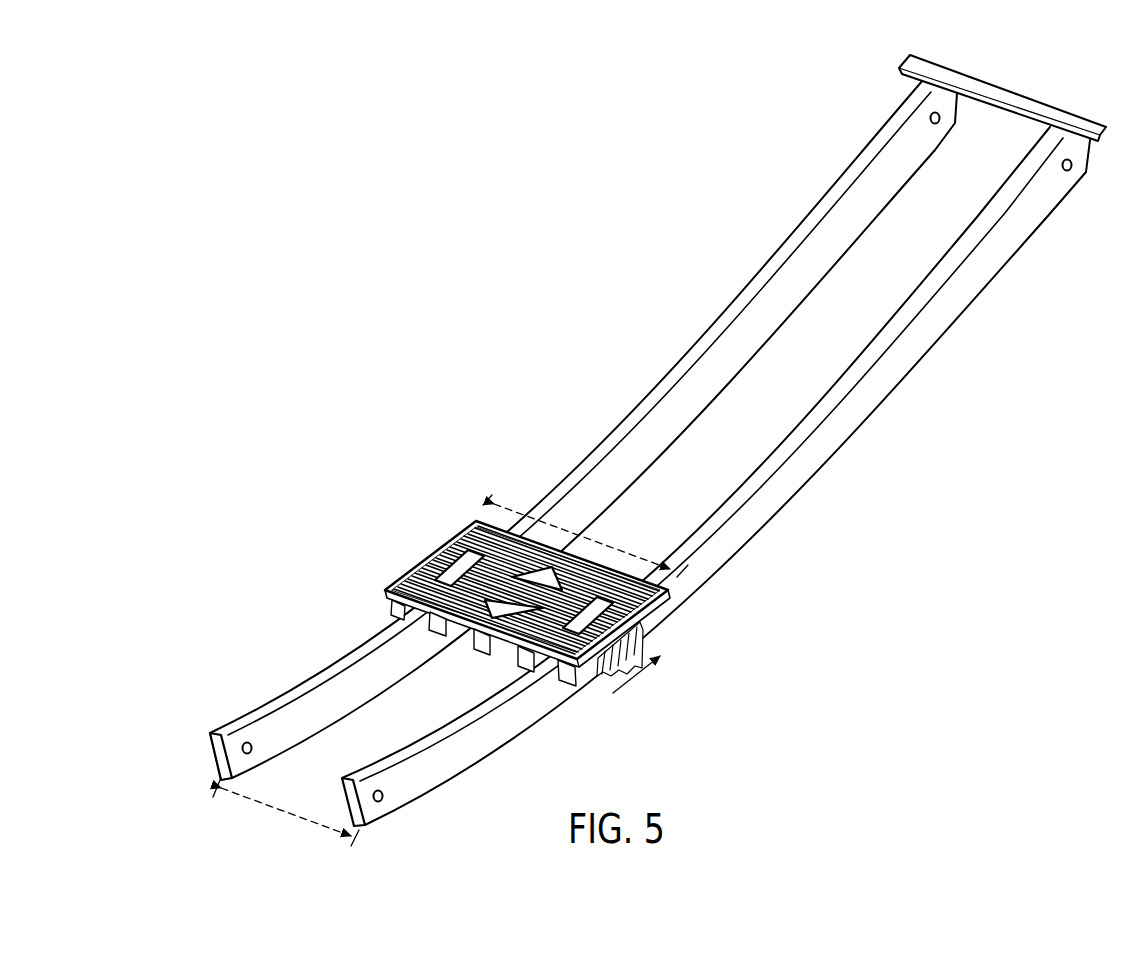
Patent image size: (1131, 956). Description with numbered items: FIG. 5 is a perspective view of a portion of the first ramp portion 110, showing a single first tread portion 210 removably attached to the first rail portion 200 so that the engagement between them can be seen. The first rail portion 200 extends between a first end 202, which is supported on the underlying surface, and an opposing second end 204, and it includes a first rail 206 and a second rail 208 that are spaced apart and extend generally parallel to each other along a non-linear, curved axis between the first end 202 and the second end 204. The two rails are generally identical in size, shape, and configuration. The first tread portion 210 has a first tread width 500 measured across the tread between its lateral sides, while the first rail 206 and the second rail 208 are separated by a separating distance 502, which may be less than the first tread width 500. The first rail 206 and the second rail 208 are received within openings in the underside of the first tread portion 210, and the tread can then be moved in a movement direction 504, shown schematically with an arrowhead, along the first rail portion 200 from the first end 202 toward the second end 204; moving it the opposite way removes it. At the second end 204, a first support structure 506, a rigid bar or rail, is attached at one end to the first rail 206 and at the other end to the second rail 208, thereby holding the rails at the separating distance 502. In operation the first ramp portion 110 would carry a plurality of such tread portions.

The first ramp portion 110 is at (438, 206).
The first rail portion 200 is at (564, 430).
The first end 202 is at (208, 716).
The second end 204 is at (974, 75).
The first rail 206 is at (767, 272).
The second rail 208 is at (795, 485).
The first tread portion 210 is at (442, 538).
The first tread width 500 is at (648, 558).
The separating distance 502 is at (317, 828).
The movement direction 504 is at (627, 686).
The first support structure 506 is at (968, 72).